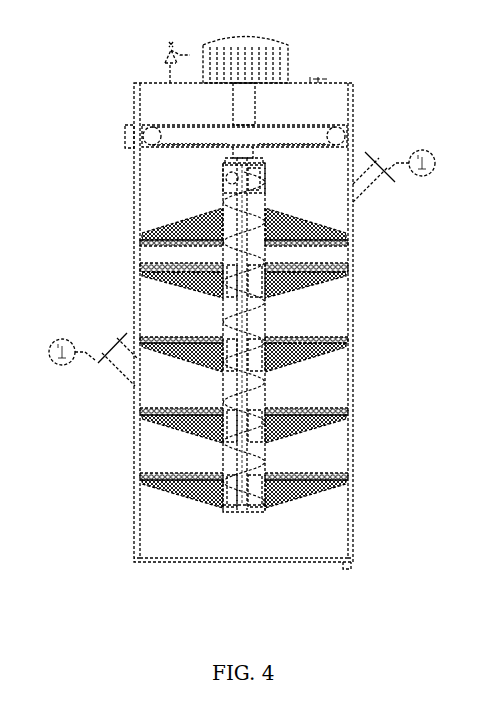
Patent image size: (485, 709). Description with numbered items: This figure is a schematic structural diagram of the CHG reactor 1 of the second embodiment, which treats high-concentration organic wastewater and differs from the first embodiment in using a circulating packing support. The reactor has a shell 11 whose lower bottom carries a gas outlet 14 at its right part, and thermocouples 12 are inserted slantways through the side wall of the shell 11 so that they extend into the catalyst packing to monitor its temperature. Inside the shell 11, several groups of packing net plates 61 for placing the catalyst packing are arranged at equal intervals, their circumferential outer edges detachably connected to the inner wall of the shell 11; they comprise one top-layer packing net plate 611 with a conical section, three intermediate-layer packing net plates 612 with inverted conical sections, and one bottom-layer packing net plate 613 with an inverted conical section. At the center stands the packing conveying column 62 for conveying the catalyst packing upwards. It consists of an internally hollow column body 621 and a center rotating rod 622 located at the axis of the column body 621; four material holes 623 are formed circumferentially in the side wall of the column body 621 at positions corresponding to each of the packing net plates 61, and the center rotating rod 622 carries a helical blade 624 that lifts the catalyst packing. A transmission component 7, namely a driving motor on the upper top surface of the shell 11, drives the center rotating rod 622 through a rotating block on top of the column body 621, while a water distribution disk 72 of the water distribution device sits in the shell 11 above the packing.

The CHG reactor 1 is at (136, 222).
The shell 11 is at (138, 307).
The thermocouple 12 is at (117, 366).
The gas outlet 14 is at (348, 568).
The transmission component 7 is at (272, 122).
The water distribution disk 72 is at (308, 130).
The packing net plate 61 is at (152, 424).
The top-layer packing net plate 611 is at (340, 242).
The intermediate-layer packing net plate 612 is at (324, 359).
The bottom-layer packing net plate 613 is at (320, 497).
The packing conveying column 62 is at (266, 458).
The column body 621 is at (224, 203).
The center rotating rod 622 is at (245, 327).
The material hole 623 is at (230, 292).
The helical blade 624 is at (218, 508).